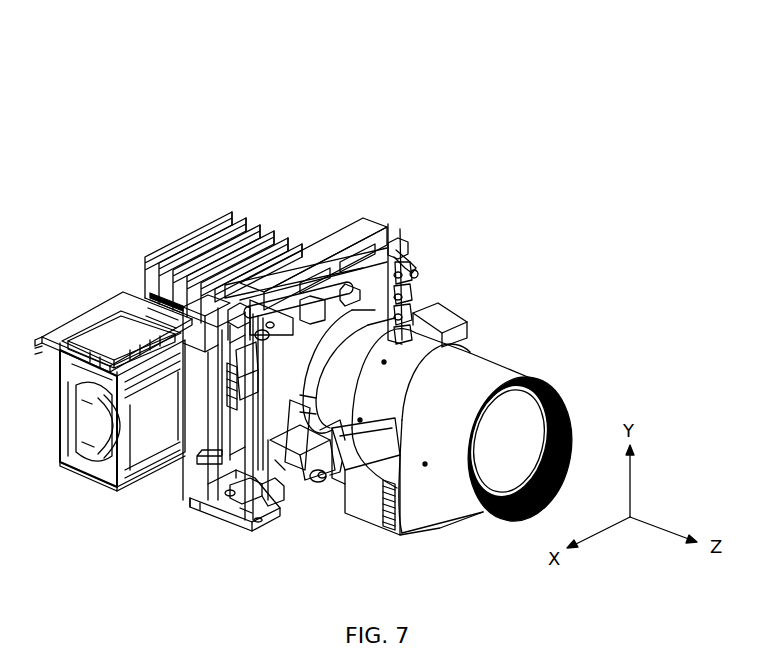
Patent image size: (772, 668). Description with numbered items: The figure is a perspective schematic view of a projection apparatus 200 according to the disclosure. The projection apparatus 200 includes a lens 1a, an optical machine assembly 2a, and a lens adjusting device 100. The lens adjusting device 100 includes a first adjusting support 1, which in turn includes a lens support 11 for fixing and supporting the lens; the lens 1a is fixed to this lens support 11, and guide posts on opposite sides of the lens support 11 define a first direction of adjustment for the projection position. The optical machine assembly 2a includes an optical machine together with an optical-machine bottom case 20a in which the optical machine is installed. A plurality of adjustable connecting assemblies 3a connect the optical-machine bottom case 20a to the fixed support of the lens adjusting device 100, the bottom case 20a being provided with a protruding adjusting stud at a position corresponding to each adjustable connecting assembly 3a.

The projection apparatus 200 is at (340, 52).
The first adjusting support 1 is at (177, 463).
The lens 1a is at (500, 355).
The optical machine assembly 2a is at (235, 215).
The optical-machine bottom case 20a is at (187, 258).
The adjustable connecting assembly 3a is at (415, 240).
The lens adjusting device 100 is at (207, 500).
The lens support 11 is at (253, 522).